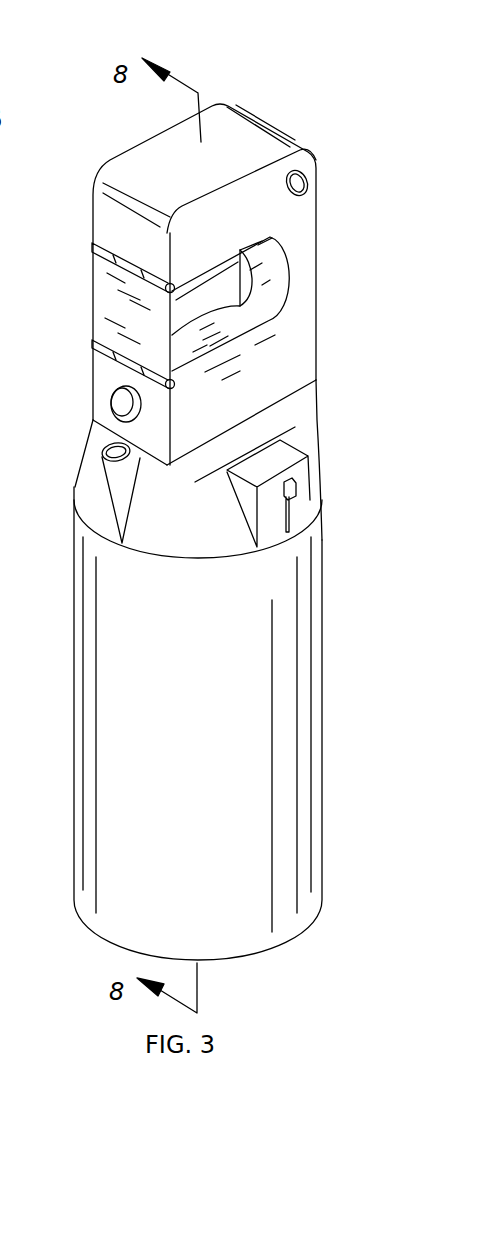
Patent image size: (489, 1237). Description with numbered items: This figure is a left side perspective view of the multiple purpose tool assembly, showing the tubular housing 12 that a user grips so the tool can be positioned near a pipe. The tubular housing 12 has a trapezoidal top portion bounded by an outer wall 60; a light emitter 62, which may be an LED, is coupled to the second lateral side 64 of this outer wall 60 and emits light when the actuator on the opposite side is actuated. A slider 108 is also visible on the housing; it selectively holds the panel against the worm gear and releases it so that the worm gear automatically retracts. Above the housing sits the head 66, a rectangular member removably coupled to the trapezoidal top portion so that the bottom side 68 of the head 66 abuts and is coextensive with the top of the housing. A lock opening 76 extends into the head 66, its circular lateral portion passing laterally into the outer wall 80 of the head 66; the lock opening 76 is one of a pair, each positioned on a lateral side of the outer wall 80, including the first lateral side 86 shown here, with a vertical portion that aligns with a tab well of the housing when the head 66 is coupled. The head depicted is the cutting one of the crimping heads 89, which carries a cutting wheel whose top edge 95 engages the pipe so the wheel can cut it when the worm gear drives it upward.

The tubular housing 12 is at (58, 709).
The outer wall 60 is at (300, 435).
The light emitter 62 is at (100, 449).
The second lateral side 64 is at (85, 497).
The head 66 is at (78, 216).
The bottom side 68 is at (317, 387).
The lock opening 76 is at (95, 391).
The outer wall 80 is at (93, 352).
The first lateral side 86 is at (93, 420).
The cutting head 89 is at (238, 108).
The top edge 95 is at (267, 268).
The slider 108 is at (291, 487).